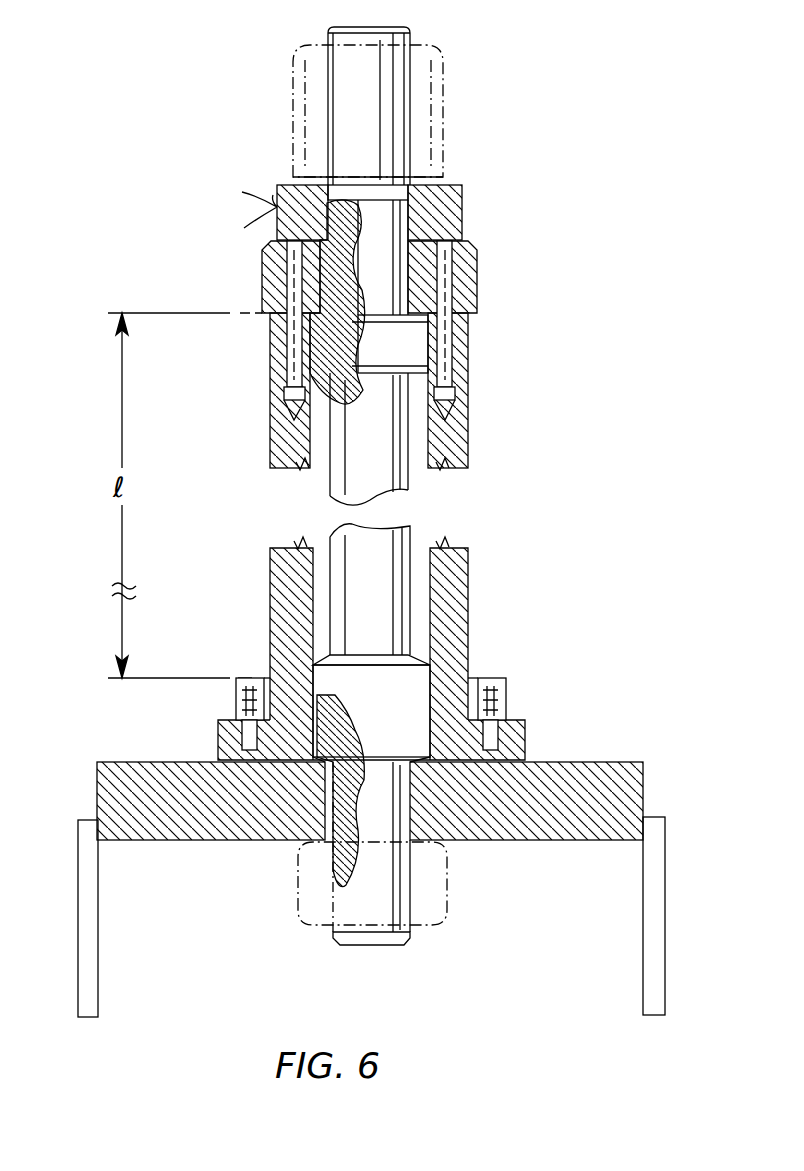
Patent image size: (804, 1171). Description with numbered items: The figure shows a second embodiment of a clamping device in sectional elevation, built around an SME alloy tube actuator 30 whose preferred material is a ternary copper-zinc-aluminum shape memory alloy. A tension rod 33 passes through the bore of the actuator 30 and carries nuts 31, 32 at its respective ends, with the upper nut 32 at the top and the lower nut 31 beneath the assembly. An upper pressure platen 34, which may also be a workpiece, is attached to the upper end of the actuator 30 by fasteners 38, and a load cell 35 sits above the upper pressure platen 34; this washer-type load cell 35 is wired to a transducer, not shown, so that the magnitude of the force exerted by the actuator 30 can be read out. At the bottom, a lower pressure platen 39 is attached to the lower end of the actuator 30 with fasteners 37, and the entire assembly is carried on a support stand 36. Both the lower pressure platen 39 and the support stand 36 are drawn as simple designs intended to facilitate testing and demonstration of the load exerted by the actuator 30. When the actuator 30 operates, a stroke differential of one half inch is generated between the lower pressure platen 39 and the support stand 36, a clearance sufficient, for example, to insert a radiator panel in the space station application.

The SME alloy tube actuator 30 is at (457, 426).
The nut 31 is at (440, 900).
The nut 32 is at (443, 82).
The tension rod 33 is at (385, 427).
The upper pressure platen 34 is at (475, 273).
The load cell 35 is at (463, 206).
The support stand 36 is at (622, 768).
The fasteners 37 is at (508, 692).
The fasteners 38 is at (470, 294).
The lower pressure platen 39 is at (525, 735).